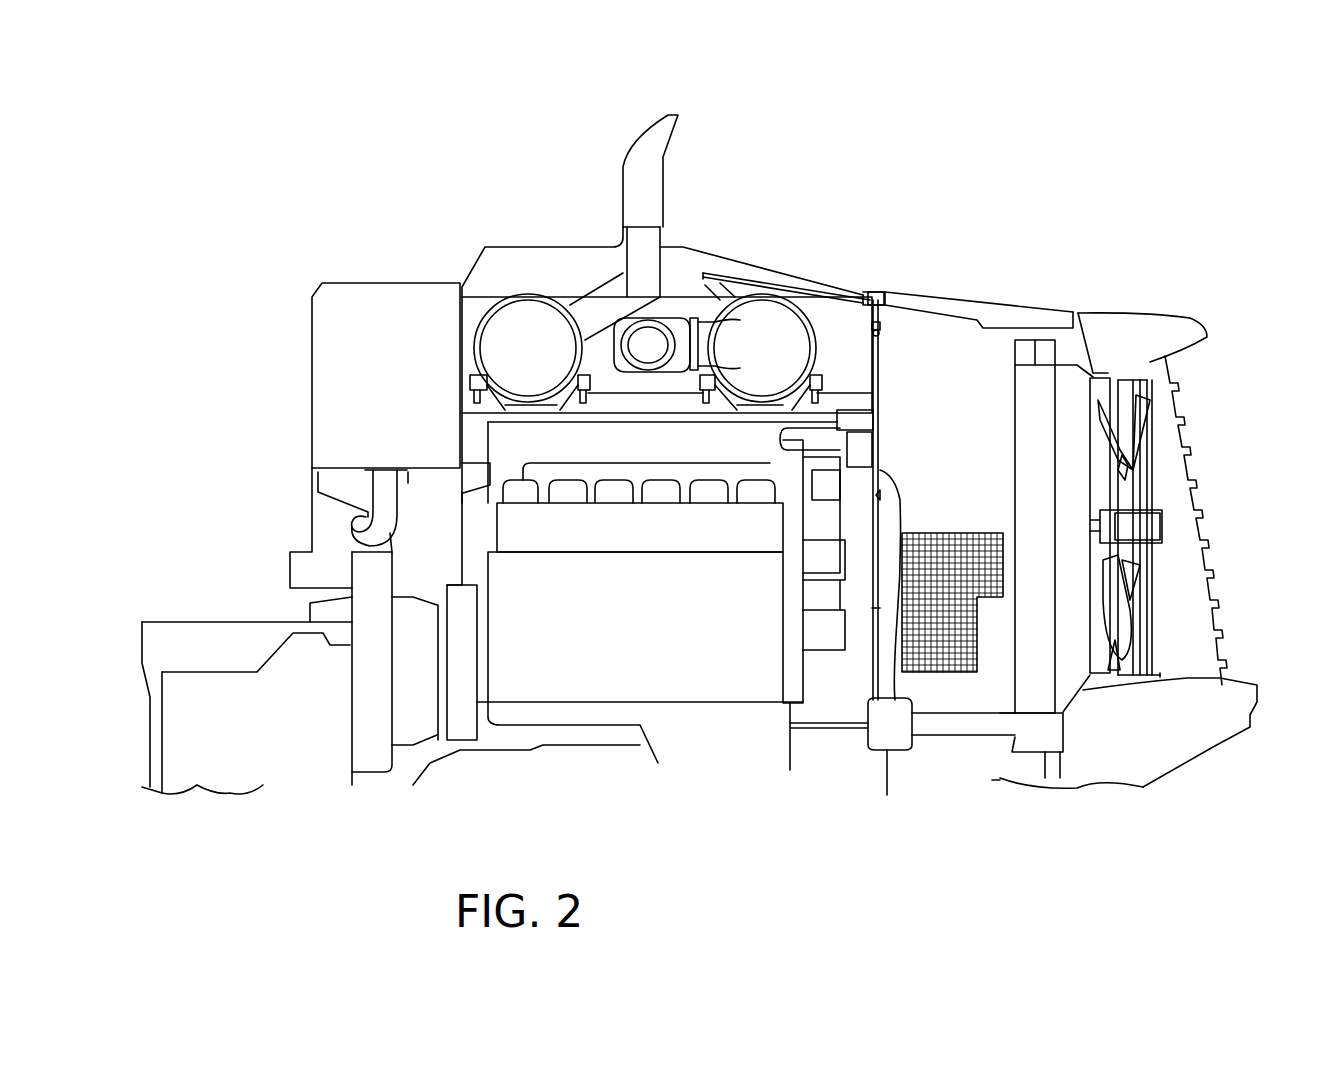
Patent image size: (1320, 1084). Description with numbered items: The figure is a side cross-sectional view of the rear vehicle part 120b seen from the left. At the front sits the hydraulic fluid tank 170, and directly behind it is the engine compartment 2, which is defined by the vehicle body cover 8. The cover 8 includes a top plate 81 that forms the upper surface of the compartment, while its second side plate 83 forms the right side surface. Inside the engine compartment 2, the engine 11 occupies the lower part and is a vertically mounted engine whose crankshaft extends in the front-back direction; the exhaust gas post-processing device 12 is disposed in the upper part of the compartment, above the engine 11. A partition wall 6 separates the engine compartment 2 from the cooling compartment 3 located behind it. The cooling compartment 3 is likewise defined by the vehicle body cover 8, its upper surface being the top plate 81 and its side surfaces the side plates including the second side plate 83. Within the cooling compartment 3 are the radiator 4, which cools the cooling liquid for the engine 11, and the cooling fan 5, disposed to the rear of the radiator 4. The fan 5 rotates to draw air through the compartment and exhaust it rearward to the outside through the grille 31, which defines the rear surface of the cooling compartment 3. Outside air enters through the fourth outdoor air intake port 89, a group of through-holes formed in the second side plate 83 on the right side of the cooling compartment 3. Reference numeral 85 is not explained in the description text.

The hydraulic fluid tank 170 is at (357, 297).
The exhaust gas post-processing device 12 is at (523, 280).
The rear vehicle part 120b is at (575, 210).
The engine compartment 2 is at (668, 312).
The top plate 81 is at (722, 253).
The vehicle body cover 8 is at (893, 285).
The hood frame 85 is at (938, 293).
The cooling compartment 3 is at (957, 357).
The radiator 4 is at (1035, 363).
The cooling fan 5 is at (1133, 452).
The grille 31 is at (1207, 502).
The fourth outdoor air intake port 89 is at (978, 628).
The partition wall 6 is at (890, 562).
The second side plate 83 is at (971, 697).
The engine 11 is at (695, 677).